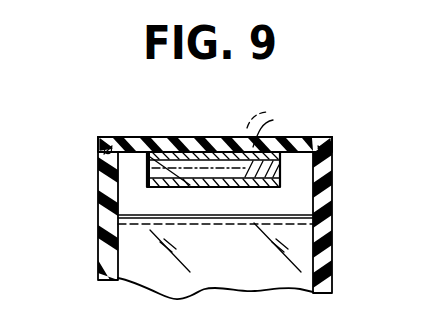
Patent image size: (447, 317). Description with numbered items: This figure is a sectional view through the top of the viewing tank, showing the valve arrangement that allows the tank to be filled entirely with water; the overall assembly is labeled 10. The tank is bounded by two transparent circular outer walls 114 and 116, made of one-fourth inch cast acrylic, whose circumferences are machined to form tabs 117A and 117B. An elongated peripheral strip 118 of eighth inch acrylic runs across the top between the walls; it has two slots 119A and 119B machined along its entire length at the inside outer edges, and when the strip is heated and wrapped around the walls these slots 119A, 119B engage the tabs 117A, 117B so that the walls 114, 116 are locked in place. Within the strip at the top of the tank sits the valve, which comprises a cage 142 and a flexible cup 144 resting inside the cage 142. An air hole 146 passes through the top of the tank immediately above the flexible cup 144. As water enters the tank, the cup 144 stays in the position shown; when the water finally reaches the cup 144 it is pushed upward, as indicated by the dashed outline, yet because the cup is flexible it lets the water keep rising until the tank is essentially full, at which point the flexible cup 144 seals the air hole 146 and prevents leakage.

The frame assembly 10 is at (309, 0).
The transparent circular outer wall 114 is at (110, 237).
The transparent circular outer wall 116 is at (334, 248).
The tab 117A is at (112, 137).
The tab 117B is at (317, 143).
The elongated peripheral strip 118 is at (153, 143).
The slot 119A is at (106, 152).
The slot 119B is at (324, 163).
The cage 142 is at (190, 185).
The flexible cup 144 is at (274, 125).
The air hole 146 is at (208, 143).